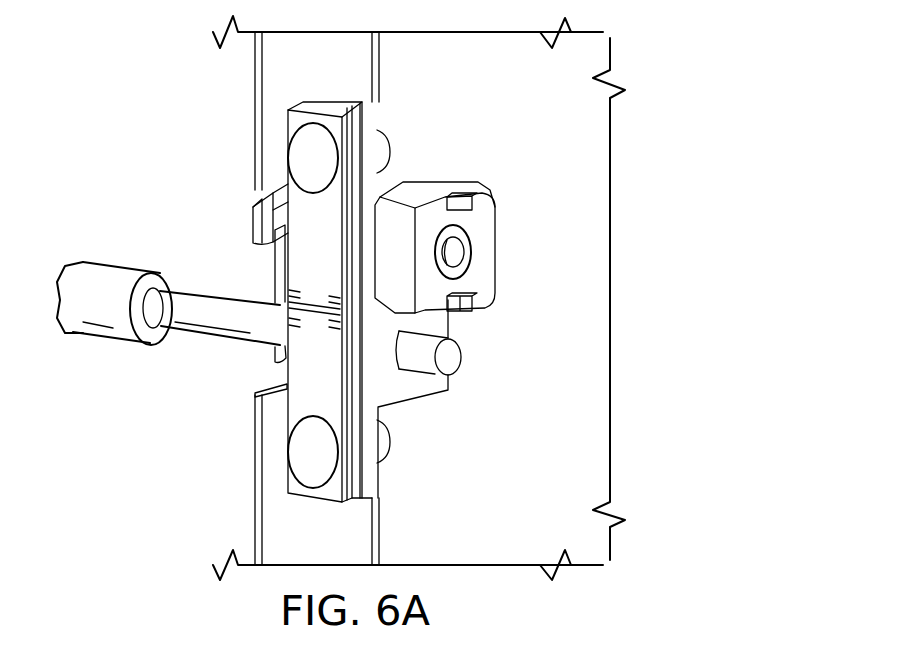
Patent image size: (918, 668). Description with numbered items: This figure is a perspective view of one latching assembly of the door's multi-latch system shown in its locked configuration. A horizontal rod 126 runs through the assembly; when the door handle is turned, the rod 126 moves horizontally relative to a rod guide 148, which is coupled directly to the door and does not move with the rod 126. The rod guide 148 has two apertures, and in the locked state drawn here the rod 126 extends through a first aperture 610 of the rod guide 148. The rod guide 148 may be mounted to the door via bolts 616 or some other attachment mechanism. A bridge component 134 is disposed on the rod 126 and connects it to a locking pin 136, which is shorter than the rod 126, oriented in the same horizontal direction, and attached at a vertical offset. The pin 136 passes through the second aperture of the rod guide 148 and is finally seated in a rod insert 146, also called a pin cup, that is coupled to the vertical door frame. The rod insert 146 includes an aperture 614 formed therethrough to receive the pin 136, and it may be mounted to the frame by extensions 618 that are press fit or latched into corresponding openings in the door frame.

The rod 126 is at (193, 305).
The bridge component 134 is at (282, 352).
The locking pin 136 is at (455, 250).
The rod insert 146 is at (467, 186).
The rod guide 148 is at (400, 407).
The first aperture 610 is at (460, 389).
The aperture 614 is at (473, 260).
The bolts 616 is at (300, 153).
The extensions 618 is at (466, 202).